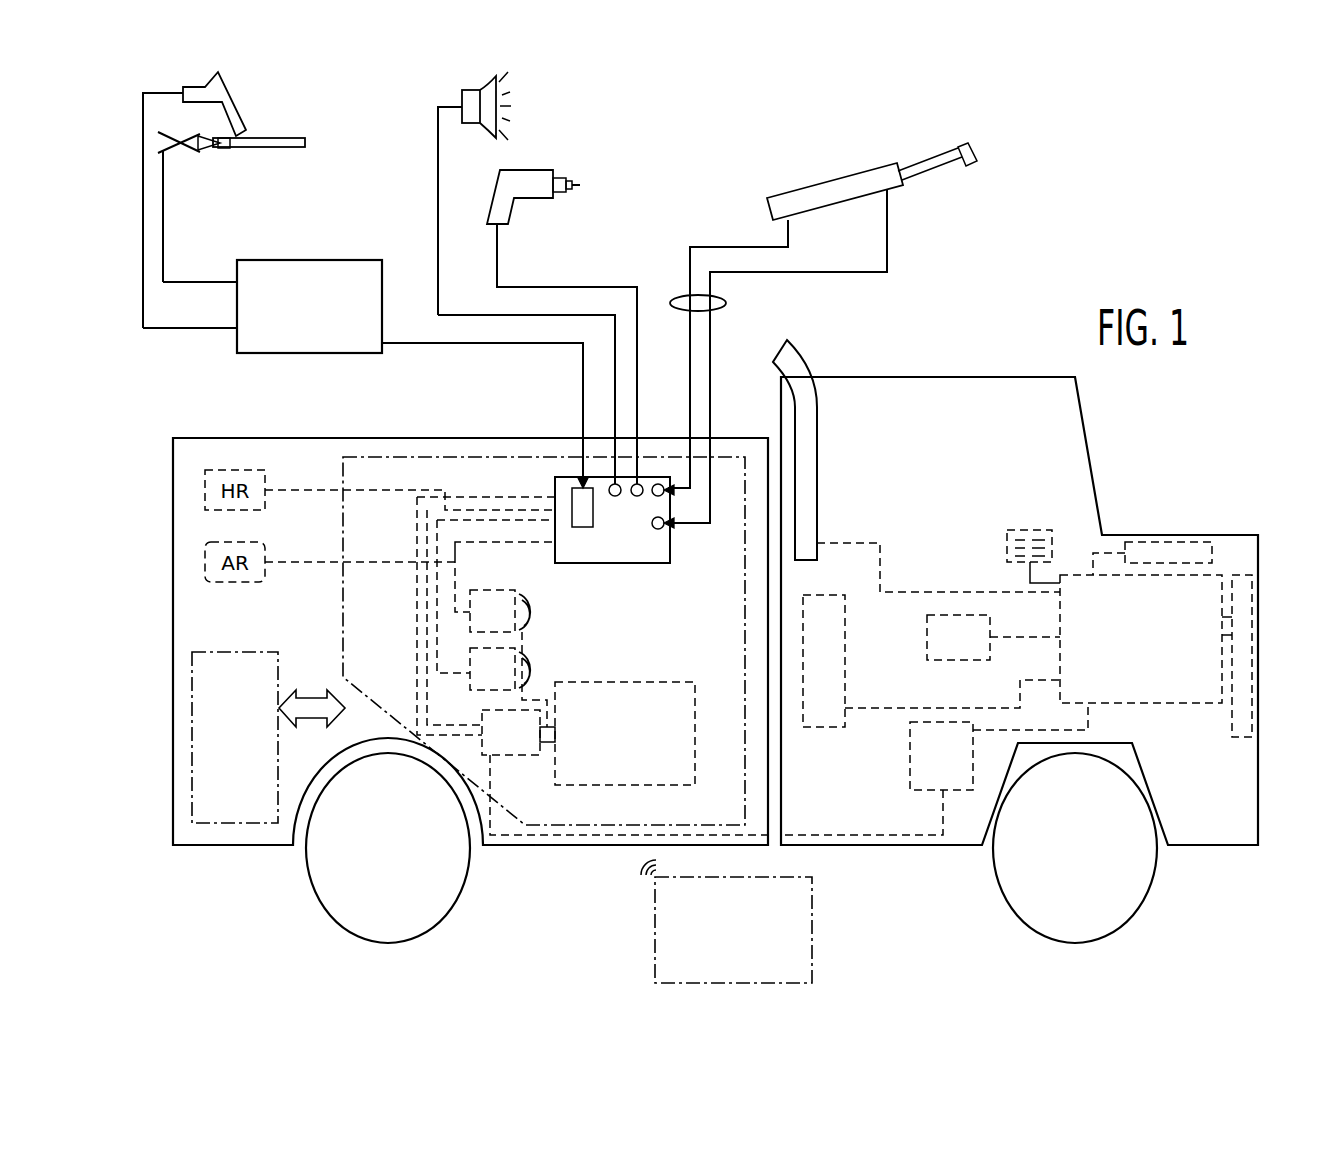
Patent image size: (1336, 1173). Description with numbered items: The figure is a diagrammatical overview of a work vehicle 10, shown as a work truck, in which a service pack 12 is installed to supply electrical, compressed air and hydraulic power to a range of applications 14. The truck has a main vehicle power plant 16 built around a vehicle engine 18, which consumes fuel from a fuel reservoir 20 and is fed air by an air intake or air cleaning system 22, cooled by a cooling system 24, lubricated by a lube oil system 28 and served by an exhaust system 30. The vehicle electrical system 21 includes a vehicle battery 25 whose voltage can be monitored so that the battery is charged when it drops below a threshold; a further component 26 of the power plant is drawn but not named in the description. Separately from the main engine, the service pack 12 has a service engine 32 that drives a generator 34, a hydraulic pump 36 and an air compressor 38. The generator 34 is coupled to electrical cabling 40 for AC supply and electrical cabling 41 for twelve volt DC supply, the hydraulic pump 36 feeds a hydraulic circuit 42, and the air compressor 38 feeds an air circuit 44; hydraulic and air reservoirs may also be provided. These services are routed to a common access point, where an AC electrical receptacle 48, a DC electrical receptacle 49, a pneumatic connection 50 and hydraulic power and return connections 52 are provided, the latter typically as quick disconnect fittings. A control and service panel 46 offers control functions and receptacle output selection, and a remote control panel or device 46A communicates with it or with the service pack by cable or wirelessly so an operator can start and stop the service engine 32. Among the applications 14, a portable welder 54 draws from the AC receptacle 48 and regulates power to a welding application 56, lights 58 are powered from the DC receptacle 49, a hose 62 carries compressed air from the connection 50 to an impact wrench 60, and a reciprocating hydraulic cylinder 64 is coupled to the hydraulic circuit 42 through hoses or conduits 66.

The work vehicle 10 is at (237, 870).
The service pack 12 is at (343, 630).
The applications 14 is at (920, 240).
The main vehicle power plant 16 is at (1112, 462).
The vehicle engine 18 is at (1140, 702).
The fuel reservoir 20 is at (825, 728).
The vehicle electrical system 21 is at (856, 797).
The air intake or air cleaning system 22 is at (1145, 540).
The cooling system 24 is at (1243, 740).
The vehicle battery 25 is at (928, 792).
The ignition switch 26 is at (1006, 548).
The lube oil system 28 is at (927, 630).
The exhaust system 30 is at (816, 479).
The service engine 32 is at (610, 682).
The generator 34 is at (512, 755).
The hydraulic pump 36 is at (490, 695).
The air compressor 38 is at (485, 590).
The electrical cabling 40 is at (416, 660).
The electrical cabling 41 is at (426, 700).
The hydraulic circuit 42 is at (436, 612).
The air circuit 44 is at (453, 553).
The control and service panel 46 is at (232, 652).
The remote control panel or device 46A is at (812, 932).
The electrical receptacle 48 is at (570, 497).
The electrical receptacle 49 is at (612, 482).
The pneumatic connection 50 is at (642, 482).
The hydraulic power and return connections 52 is at (662, 530).
The portable welder 54 is at (317, 259).
The welding application 56 is at (283, 138).
The lights 58 is at (466, 92).
The impact wrench 60 is at (527, 170).
The hose 62 is at (566, 287).
The reciprocating hydraulic cylinder 64 is at (835, 178).
The hoses or conduits 66 is at (676, 300).